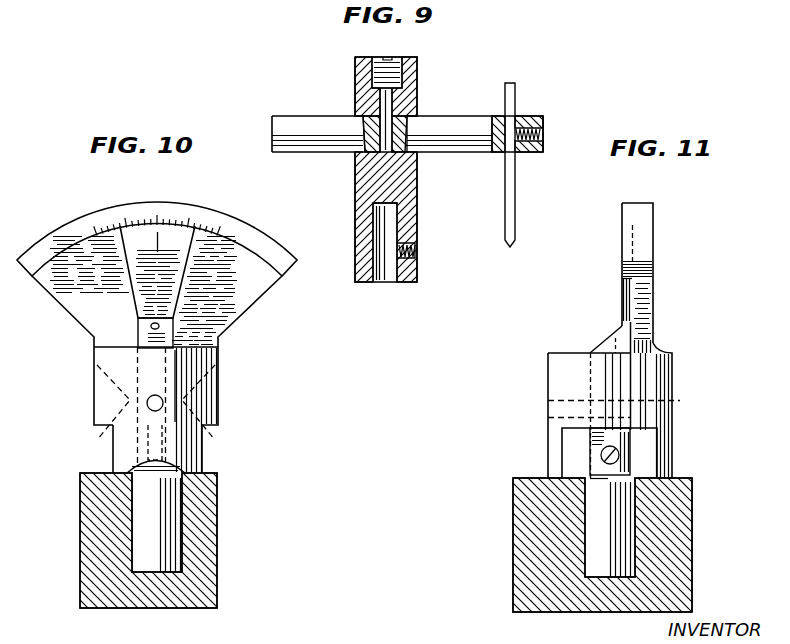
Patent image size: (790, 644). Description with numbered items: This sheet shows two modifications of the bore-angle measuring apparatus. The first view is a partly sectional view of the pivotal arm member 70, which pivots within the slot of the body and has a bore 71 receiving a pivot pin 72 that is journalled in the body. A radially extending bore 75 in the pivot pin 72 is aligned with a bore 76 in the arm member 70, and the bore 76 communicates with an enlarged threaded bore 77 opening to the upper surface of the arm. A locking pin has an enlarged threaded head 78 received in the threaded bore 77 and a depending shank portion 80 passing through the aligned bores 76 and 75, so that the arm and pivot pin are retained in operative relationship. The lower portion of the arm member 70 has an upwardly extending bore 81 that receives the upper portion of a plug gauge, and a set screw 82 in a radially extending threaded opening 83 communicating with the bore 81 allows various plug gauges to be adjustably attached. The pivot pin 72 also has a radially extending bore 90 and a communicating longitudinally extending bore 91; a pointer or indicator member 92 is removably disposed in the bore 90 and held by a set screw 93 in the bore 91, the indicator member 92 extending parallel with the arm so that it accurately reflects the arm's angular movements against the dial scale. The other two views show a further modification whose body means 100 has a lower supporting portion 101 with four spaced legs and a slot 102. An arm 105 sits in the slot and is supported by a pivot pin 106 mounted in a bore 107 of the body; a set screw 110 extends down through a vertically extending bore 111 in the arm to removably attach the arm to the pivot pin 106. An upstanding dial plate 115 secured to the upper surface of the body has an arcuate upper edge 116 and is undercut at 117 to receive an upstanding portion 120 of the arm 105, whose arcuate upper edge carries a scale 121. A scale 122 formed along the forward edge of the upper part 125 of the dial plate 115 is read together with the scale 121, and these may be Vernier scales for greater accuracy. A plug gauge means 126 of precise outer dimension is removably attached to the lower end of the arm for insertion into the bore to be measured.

In FIG. 9, the arm member 70 is at (418, 184).
In FIG. 9, the bore 71 is at (414, 112).
In FIG. 9, the pivot pin 72 is at (320, 146).
In FIG. 9, the radially extending bore 75 is at (398, 137).
In FIG. 9, the bore 76 is at (358, 108).
In FIG. 9, the enlarged threaded bore 77 is at (408, 70).
In FIG. 9, the enlarged threaded head 78 is at (390, 58).
In FIG. 9, the depending shank portion 80 is at (378, 134).
In FIG. 9, the upwardly extending bore 81 is at (385, 280).
In FIG. 9, the set screw 82 is at (416, 252).
In FIG. 9, the radially extending threaded opening 83 is at (412, 246).
In FIG. 9, the radially extending bore 90 is at (518, 118).
In FIG. 9, the longitudinally extending bore 91 is at (540, 126).
In FIG. 9, the indicator member 92 is at (516, 205).
In FIG. 9, the set screw 93 is at (540, 152).
In FIG. 10, the body means 100 is at (228, 405).
In FIG. 11, the body means 100 is at (688, 379).
In FIG. 10, the lower supporting portion 101 is at (212, 461).
In FIG. 11, the lower supporting portion 101 is at (690, 456).
In FIG. 10, the slot 102 is at (216, 364).
In FIG. 10, the arm 105 is at (140, 337).
In FIG. 10, the pivot pin 106 is at (150, 397).
In FIG. 11, the pivot pin 106 is at (562, 398).
In FIG. 11, the bore 107 is at (552, 418).
In FIG. 11, the set screw 110 is at (615, 340).
In FIG. 11, the vertically extending bore 111 is at (594, 366).
In FIG. 11, the dial plate 115 is at (645, 306).
In FIG. 10, the arcuate upper edge 116 is at (236, 222).
In FIG. 11, the undercut 117 is at (623, 228).
In FIG. 10, the upstanding portion 120 is at (145, 262).
In FIG. 11, the upstanding portion 120 is at (625, 290).
In FIG. 10, the scale 121 is at (161, 241).
In FIG. 10, the scale 122 is at (177, 200).
In FIG. 11, the upper part 125 is at (640, 210).
In FIG. 10, the plug gauge means 126 is at (165, 523).
In FIG. 11, the plug gauge means 126 is at (611, 538).